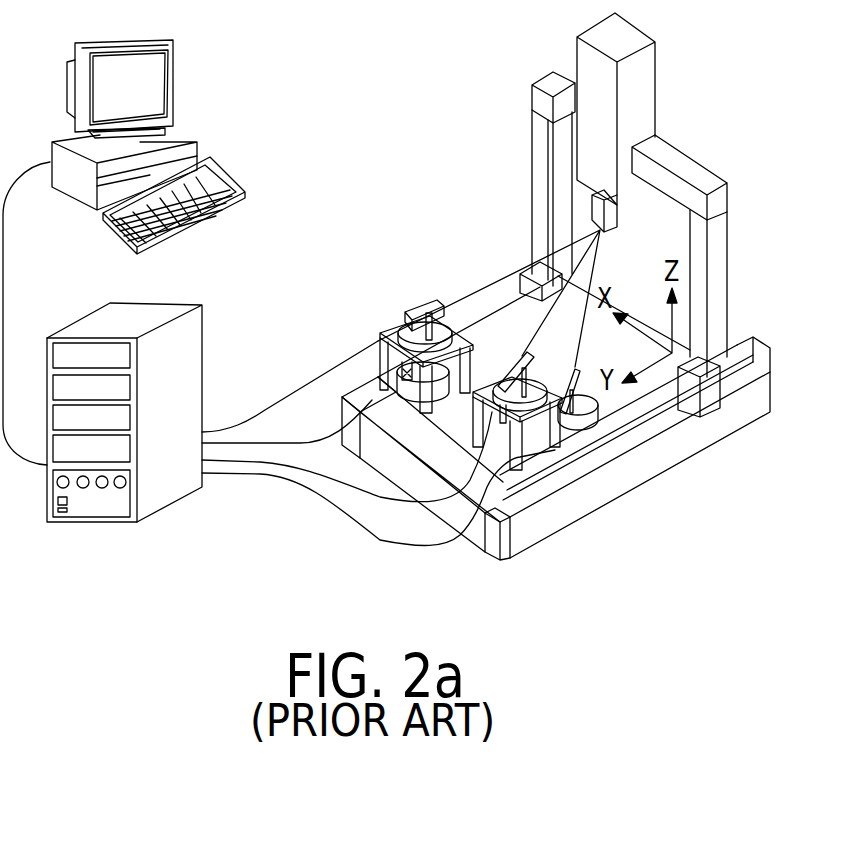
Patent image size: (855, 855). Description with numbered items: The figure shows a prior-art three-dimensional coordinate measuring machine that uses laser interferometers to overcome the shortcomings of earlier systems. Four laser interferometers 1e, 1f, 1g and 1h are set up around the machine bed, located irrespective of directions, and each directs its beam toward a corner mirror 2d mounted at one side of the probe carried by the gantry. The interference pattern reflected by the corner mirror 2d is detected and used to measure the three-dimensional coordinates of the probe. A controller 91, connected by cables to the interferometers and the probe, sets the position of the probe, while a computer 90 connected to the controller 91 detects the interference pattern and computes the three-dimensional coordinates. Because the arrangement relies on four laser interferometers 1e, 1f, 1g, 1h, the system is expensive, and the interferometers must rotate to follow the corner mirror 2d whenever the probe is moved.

The computer 90 is at (175, 92).
The controller 91 is at (177, 493).
The corner mirror 2d is at (598, 228).
The laser interferometer 1e is at (378, 343).
The laser interferometer 1f is at (418, 310).
The laser interferometer 1g is at (520, 354).
The laser interferometer 1h is at (580, 370).